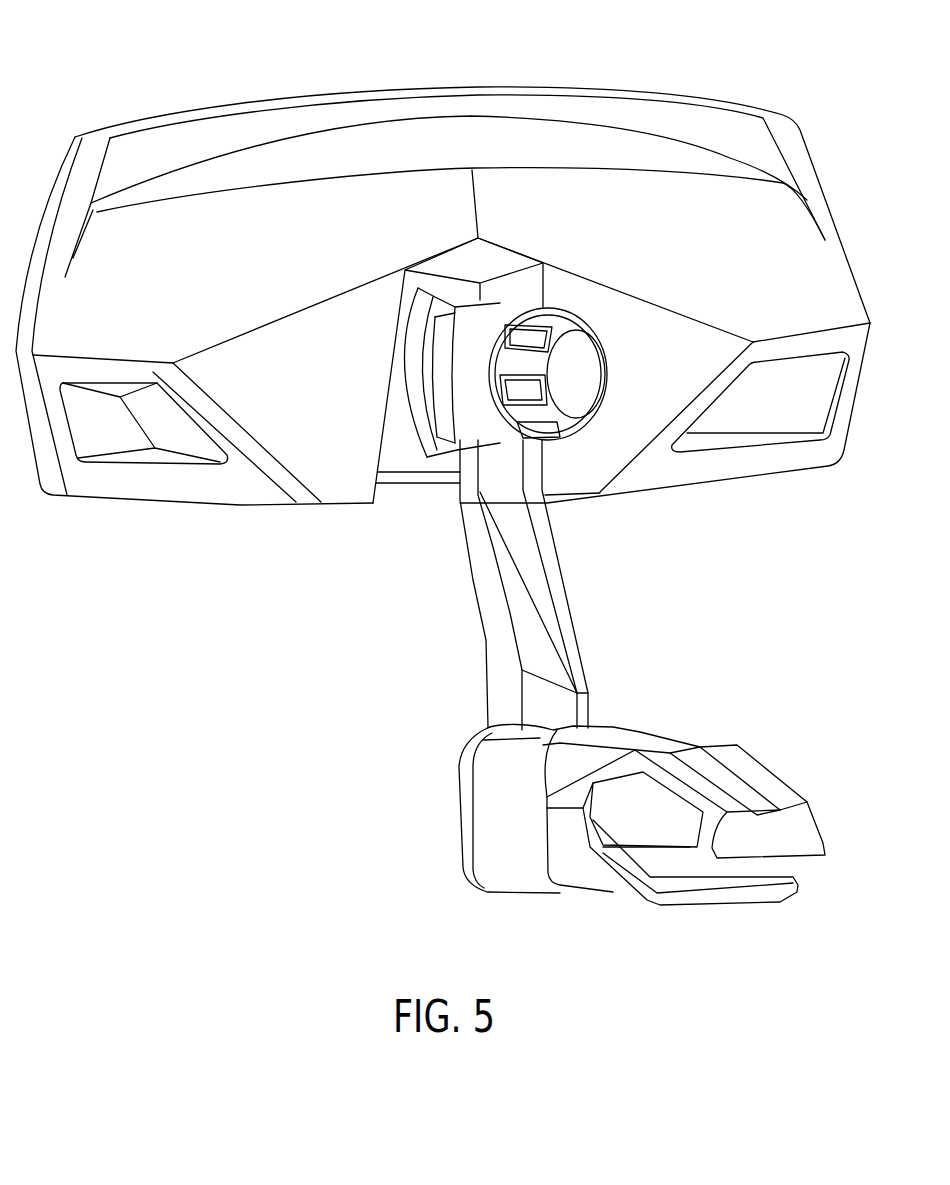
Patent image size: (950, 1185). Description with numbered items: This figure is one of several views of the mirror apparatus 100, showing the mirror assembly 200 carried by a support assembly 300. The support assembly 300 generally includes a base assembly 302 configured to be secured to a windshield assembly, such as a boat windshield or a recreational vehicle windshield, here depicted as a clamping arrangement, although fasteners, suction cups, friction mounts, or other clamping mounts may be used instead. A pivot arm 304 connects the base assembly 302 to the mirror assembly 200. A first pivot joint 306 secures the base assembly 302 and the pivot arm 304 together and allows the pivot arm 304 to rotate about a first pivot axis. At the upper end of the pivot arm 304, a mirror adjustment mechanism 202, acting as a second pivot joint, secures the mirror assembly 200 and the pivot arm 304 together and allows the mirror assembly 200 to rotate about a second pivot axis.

The rearview mirror assembly 100 is at (193, 51).
The mirror assembly 200 is at (264, 262).
The mirror adjustment mechanism 202 is at (580, 376).
The support assembly 300 is at (431, 751).
The base assembly 302 is at (717, 905).
The pivot arm 304 is at (477, 587).
The first pivot joint 306 is at (458, 837).